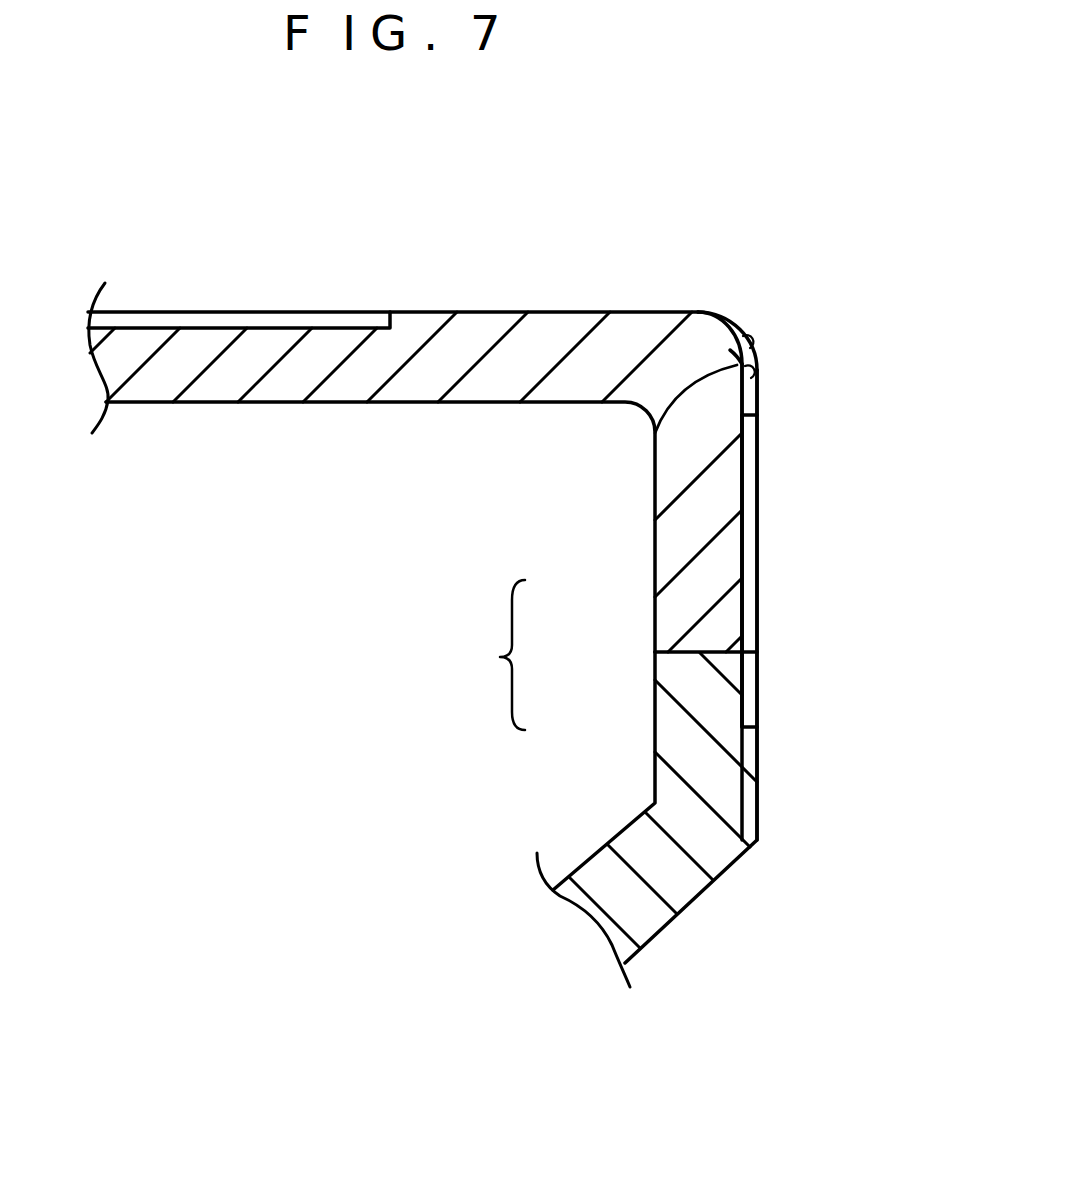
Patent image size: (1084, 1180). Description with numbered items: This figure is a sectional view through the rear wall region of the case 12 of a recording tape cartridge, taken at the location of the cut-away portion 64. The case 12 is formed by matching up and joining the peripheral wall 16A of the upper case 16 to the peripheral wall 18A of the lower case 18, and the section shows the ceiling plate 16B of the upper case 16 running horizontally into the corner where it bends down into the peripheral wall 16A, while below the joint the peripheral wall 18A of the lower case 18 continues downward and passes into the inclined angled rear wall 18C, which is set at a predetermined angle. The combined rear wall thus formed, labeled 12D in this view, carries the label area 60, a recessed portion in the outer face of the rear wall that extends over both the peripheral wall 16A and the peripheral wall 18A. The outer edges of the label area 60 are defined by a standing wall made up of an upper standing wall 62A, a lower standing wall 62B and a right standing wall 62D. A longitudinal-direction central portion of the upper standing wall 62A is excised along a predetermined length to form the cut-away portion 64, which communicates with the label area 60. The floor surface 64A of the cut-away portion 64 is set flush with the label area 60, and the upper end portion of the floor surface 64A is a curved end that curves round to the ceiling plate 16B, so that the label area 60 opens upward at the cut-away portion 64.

The case 12 is at (373, 282).
The side edge portion 12D is at (473, 655).
The upper case 16 is at (328, 404).
The peripheral wall 16A is at (668, 555).
The ceiling plate 16B is at (477, 333).
The lower case 18 is at (732, 869).
The peripheral wall 18A is at (677, 730).
The angled rear wall 18C is at (647, 918).
The label area 60 is at (742, 560).
The upper standing wall 62A is at (753, 392).
The lower standing wall 62B is at (748, 723).
The right standing wall 62D is at (755, 470).
The cut-away portion 64 is at (755, 348).
The floor surface 64A is at (737, 366).